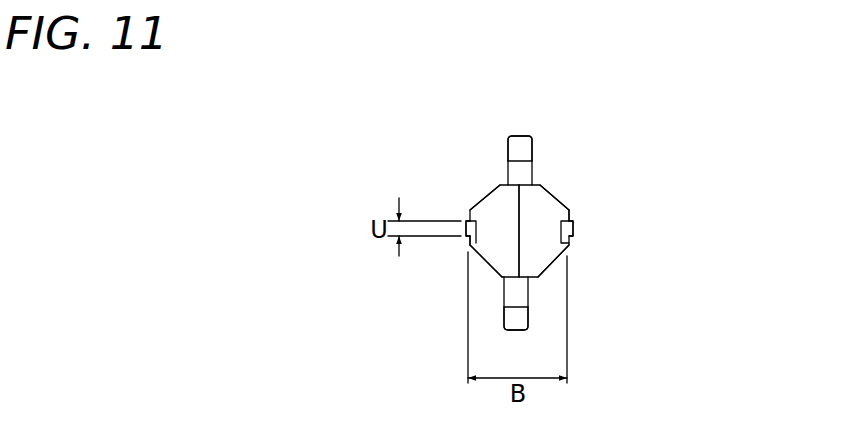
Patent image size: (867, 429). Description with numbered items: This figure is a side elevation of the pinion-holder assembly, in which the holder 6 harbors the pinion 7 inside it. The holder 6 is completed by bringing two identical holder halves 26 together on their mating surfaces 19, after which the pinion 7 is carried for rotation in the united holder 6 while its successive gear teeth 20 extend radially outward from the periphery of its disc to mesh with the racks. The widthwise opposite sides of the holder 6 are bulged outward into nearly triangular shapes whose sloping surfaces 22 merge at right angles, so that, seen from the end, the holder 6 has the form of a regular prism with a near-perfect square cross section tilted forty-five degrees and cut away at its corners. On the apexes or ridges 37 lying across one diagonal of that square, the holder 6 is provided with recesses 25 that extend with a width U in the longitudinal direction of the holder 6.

The holder 6 is at (537, 203).
The pinion 7 is at (525, 170).
The mating surface 19 is at (553, 262).
The gear teeth 20 is at (519, 142).
The sloping surfaces 22 is at (488, 210).
The recess 25 is at (466, 224).
The holder half 26 is at (490, 214).
The apex or ridge 37 is at (468, 246).